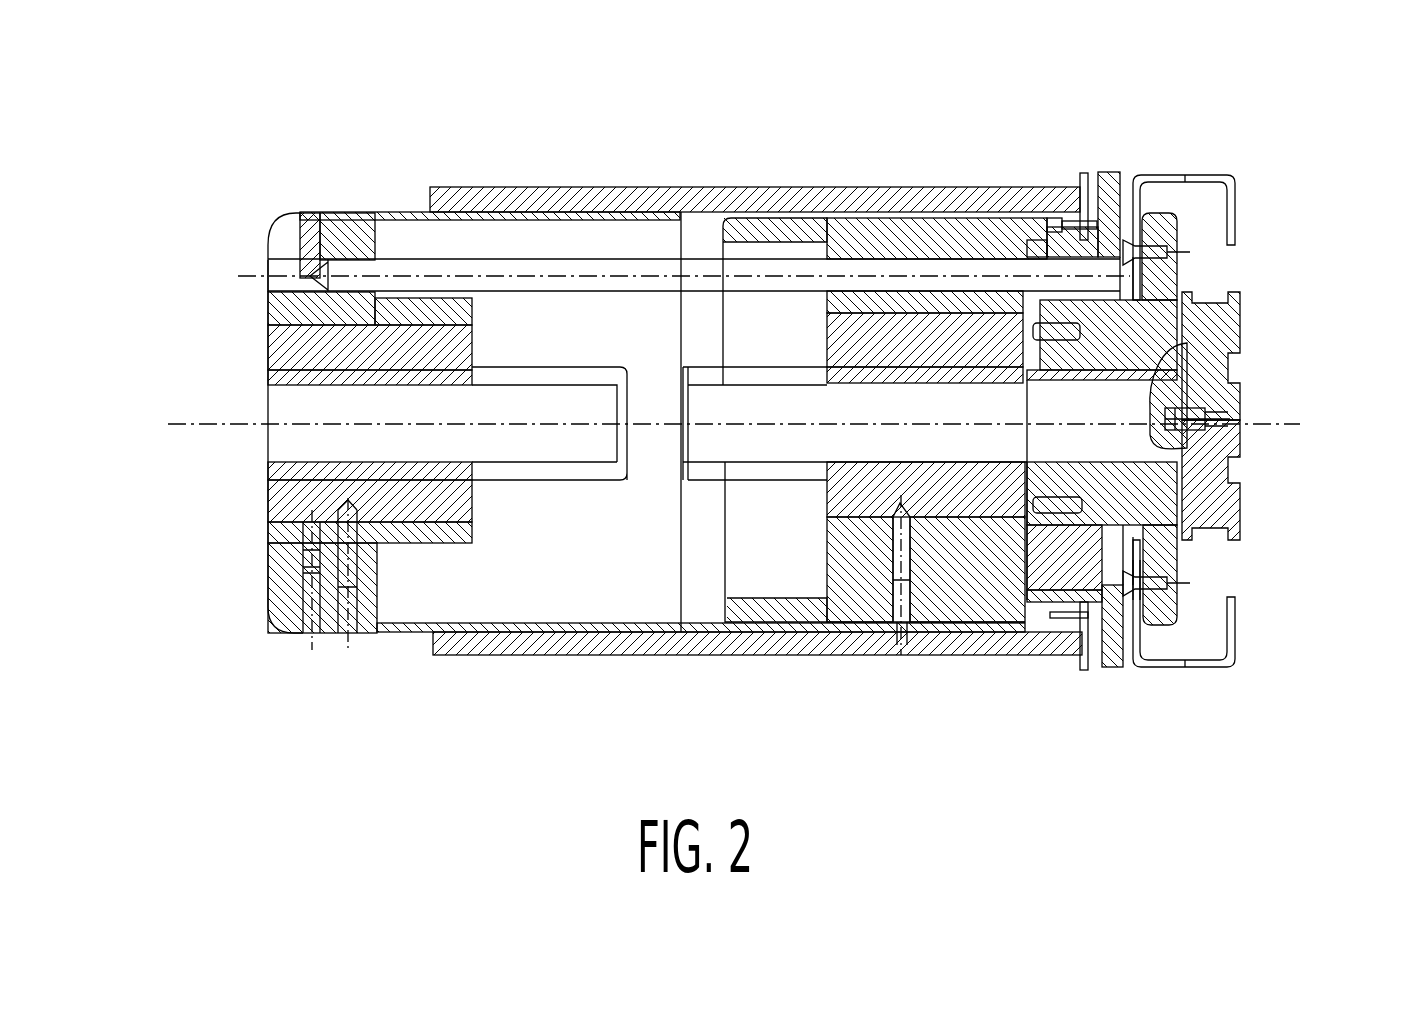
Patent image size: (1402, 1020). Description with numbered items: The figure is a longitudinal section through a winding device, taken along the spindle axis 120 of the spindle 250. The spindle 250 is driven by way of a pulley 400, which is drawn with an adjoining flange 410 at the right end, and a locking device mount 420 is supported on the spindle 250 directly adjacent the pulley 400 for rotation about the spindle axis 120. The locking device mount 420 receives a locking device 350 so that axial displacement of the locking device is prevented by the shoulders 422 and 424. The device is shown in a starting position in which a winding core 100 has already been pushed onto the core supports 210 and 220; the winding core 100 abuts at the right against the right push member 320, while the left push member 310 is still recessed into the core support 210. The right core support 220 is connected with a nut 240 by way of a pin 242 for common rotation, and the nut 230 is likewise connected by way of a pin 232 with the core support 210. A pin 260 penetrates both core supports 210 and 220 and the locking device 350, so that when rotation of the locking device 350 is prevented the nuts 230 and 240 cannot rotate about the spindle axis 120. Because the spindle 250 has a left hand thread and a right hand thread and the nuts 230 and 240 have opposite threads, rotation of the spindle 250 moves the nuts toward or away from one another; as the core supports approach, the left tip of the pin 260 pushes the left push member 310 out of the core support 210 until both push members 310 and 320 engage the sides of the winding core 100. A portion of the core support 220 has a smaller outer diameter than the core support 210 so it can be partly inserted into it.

The winding core 100 is at (757, 187).
The spindle axis 120 is at (320, 427).
The core support 210 is at (540, 212).
The core support 220 is at (800, 232).
The nut 230 is at (280, 340).
The pin 232 is at (340, 587).
The nut 240 is at (847, 512).
The pin 242 is at (897, 567).
The spindle 250 is at (303, 448).
The pin 260 is at (393, 262).
The left push member 310 is at (280, 212).
The right push member 320 is at (1080, 177).
The locking device 350 is at (1117, 172).
The pulley 400 is at (1233, 510).
The flange 410 is at (1183, 360).
The locking device mount 420 is at (1165, 660).
The shoulder 422 is at (1022, 530).
The shoulder 424 is at (1140, 532).